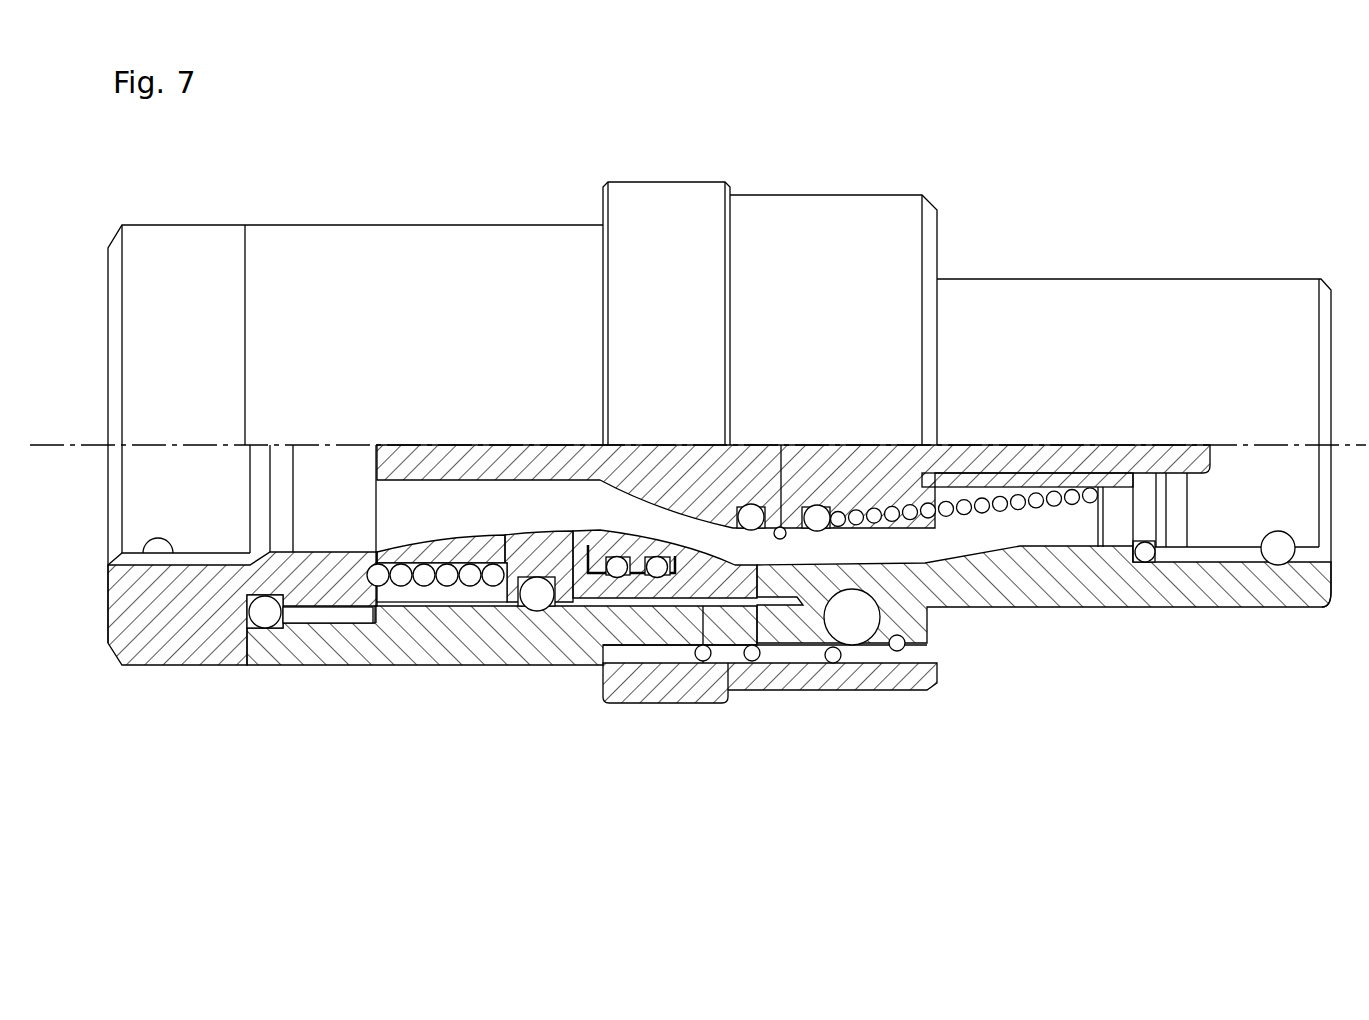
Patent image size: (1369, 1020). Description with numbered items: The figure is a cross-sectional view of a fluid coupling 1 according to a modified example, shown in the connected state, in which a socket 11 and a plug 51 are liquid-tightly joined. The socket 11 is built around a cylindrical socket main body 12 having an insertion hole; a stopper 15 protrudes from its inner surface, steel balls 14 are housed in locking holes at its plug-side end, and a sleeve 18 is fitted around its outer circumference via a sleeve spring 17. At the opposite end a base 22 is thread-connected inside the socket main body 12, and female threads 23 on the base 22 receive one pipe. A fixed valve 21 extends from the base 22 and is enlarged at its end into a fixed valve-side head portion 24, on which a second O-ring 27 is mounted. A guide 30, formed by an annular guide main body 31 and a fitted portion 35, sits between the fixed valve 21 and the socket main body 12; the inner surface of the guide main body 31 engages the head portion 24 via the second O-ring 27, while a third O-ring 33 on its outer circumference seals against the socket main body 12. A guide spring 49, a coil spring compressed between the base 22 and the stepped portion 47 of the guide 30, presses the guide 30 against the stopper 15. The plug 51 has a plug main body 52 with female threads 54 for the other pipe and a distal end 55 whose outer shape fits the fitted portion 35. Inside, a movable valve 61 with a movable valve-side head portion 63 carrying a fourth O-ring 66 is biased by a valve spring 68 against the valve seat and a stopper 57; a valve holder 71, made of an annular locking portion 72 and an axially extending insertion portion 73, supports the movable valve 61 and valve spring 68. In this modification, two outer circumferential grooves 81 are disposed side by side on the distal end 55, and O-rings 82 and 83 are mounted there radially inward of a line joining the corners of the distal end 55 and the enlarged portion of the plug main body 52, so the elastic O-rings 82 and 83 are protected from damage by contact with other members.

The fluid coupling 1 is at (794, 93).
The socket 11 is at (333, 223).
The socket main body 12 is at (370, 665).
The steel balls 14 is at (862, 640).
The stopper 15 is at (778, 692).
The sleeve spring 17 is at (828, 662).
The sleeve 18 is at (837, 690).
The fixed valve 21 is at (441, 483).
The base 22 is at (310, 610).
The female threads 23 is at (152, 556).
The fixed valve-side head portion 24 is at (781, 527).
The second O-ring 27 is at (752, 504).
The guide 30 is at (562, 560).
The guide main body 31 is at (540, 602).
The third O-ring 33 is at (527, 610).
The fitted portion 35 is at (728, 692).
The stepped portion 47 is at (487, 610).
The guide spring 49 is at (410, 585).
The plug 51 is at (1123, 281).
The plug main body 52 is at (1047, 607).
The female threads 54 is at (1285, 565).
The distal end 55 is at (640, 650).
The stopper 57 is at (640, 520).
The movable valve 61 is at (1015, 488).
The movable valve-side head portion 63 is at (856, 535).
The fourth O-ring 66 is at (819, 505).
The valve spring 68 is at (935, 540).
The valve holder 71 is at (1147, 693).
The locking portion 72 is at (1140, 560).
The insertion portion 73 is at (1097, 500).
The outer circumferential grooves 81 is at (615, 555).
The O-ring 82 is at (625, 583).
The O-ring 83 is at (665, 580).